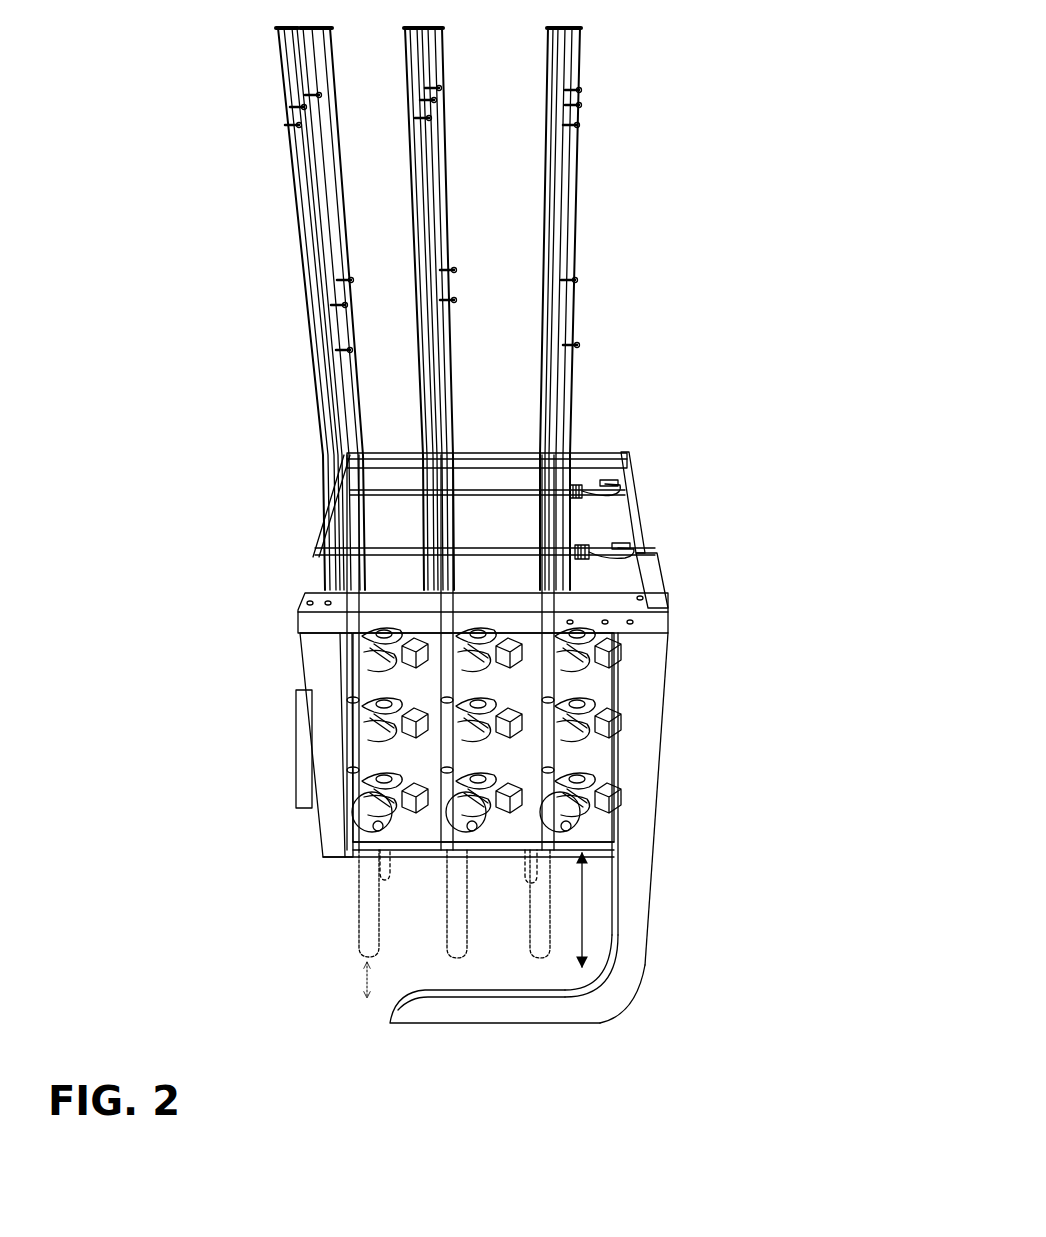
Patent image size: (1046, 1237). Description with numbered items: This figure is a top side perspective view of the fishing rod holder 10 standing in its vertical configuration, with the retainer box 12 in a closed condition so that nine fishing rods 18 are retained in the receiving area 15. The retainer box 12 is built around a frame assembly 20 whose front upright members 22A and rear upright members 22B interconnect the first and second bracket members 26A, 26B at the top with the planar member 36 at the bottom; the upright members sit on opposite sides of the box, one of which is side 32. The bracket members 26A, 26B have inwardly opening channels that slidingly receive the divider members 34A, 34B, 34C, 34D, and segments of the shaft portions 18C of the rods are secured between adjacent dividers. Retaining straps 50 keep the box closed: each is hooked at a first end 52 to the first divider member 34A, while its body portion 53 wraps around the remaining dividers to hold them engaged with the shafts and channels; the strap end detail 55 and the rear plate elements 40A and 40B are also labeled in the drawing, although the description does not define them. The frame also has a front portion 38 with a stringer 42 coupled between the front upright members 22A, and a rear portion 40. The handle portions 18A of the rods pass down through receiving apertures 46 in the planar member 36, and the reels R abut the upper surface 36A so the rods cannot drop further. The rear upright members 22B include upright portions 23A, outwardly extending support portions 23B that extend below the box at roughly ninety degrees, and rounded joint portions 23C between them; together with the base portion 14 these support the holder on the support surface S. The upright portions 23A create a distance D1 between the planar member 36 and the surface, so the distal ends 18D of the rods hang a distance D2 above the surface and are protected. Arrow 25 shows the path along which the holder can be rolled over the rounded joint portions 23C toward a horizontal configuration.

The fishing rod holder 10 is at (645, 392).
The retainer box 12 is at (670, 460).
The base portion 14 is at (662, 1022).
The receiving area 15 is at (420, 683).
The fishing rods 18 is at (602, 282).
The handle portion 18A is at (367, 933).
The shaft portion 18C is at (553, 190).
The distal end 18D is at (382, 950).
The frame assembly 20 is at (273, 647).
The front upright members 22A is at (320, 663).
The rear upright members 22B is at (648, 693).
The upright portions 23A is at (637, 788).
The outwardly extending support portions 23B is at (523, 1012).
The rounded joint portions 23C is at (628, 1008).
The arrow 25 is at (703, 634).
The first bracket member 26A is at (368, 455).
The second bracket member 26B is at (322, 598).
The side 32 is at (298, 855).
The first divider member 34A is at (590, 472).
The divider member 34B is at (497, 475).
The divider member 34C is at (413, 477).
The divider member 34D is at (323, 540).
The planar member 36 is at (503, 853).
The upper surface 36A is at (600, 833).
The front portion 38 is at (277, 750).
The rear portion 40 is at (662, 543).
The lower side plate 40A is at (662, 580).
The upper side plate 40B is at (638, 486).
The stringer 42 is at (303, 785).
The receiving apertures 46 is at (600, 752).
The retaining straps 50 is at (387, 457).
The first end 52 is at (605, 485).
The body portions 53 is at (417, 493).
The hook 55 is at (630, 490).
The distance D1 is at (600, 918).
The distance D2 is at (365, 982).
The reels R is at (547, 820).
The support surface S is at (672, 1073).